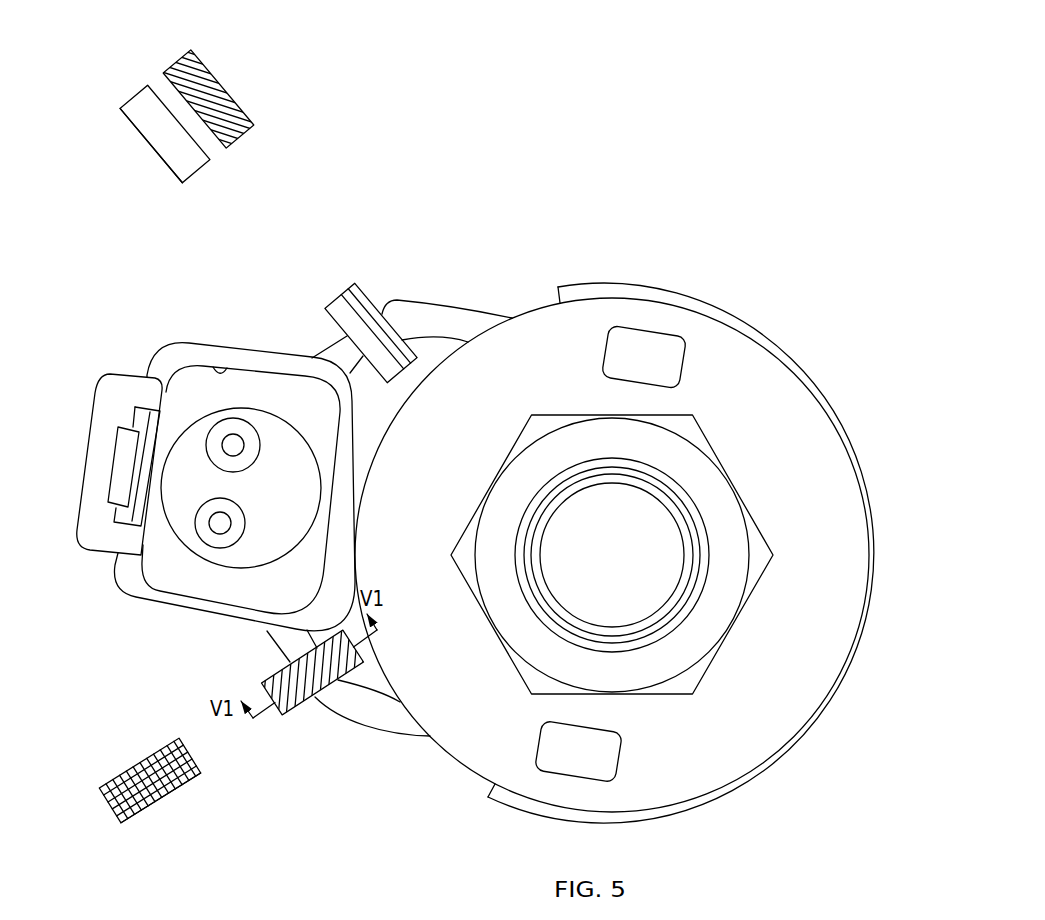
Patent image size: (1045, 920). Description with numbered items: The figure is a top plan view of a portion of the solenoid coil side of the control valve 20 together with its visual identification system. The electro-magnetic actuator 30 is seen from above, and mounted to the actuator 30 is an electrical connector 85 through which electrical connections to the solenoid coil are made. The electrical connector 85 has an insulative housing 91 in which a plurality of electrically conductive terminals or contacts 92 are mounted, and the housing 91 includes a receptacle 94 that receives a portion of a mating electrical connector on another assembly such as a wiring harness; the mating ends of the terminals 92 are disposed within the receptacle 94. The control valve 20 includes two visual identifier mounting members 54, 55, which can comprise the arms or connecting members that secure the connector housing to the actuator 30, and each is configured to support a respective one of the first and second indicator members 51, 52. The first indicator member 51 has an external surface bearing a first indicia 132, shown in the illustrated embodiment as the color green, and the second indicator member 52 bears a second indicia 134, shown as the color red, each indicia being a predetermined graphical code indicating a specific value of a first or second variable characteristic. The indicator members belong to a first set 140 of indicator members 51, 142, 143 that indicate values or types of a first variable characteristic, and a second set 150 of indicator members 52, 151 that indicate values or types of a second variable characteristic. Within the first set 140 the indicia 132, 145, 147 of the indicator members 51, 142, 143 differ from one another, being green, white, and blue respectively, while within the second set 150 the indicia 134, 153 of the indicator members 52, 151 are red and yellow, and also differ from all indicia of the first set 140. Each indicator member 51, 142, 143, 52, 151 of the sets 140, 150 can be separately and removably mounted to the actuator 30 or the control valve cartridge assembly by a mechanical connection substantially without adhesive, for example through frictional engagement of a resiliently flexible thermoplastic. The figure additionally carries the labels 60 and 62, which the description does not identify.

The control valve 20 is at (783, 264).
The electro-magnetic actuator 30 is at (850, 520).
The first indicator member 51 is at (360, 301).
The second indicator member 52 is at (287, 680).
The visual identifier mounting member 54 is at (428, 318).
The visual identifier mounting member 55 is at (357, 713).
The pad assembly 60 is at (188, 103).
The first mounting region 62 is at (340, 263).
The electrical connector 85 is at (77, 411).
The insulative housing 91 is at (185, 344).
The electrically conductive terminals 92 is at (238, 448).
The receptacle 94 is at (222, 367).
The first indicia 132 is at (341, 301).
The second indicia 134 is at (300, 695).
The first set of indicator members 140 is at (293, 263).
The indicator member 142 is at (132, 128).
The indicator member 143 is at (223, 88).
The indicia 145 is at (163, 148).
The indicia 147 is at (235, 122).
The second set of indicator members 150 is at (199, 799).
The indicator member 151 is at (175, 778).
The indicia 153 is at (143, 778).